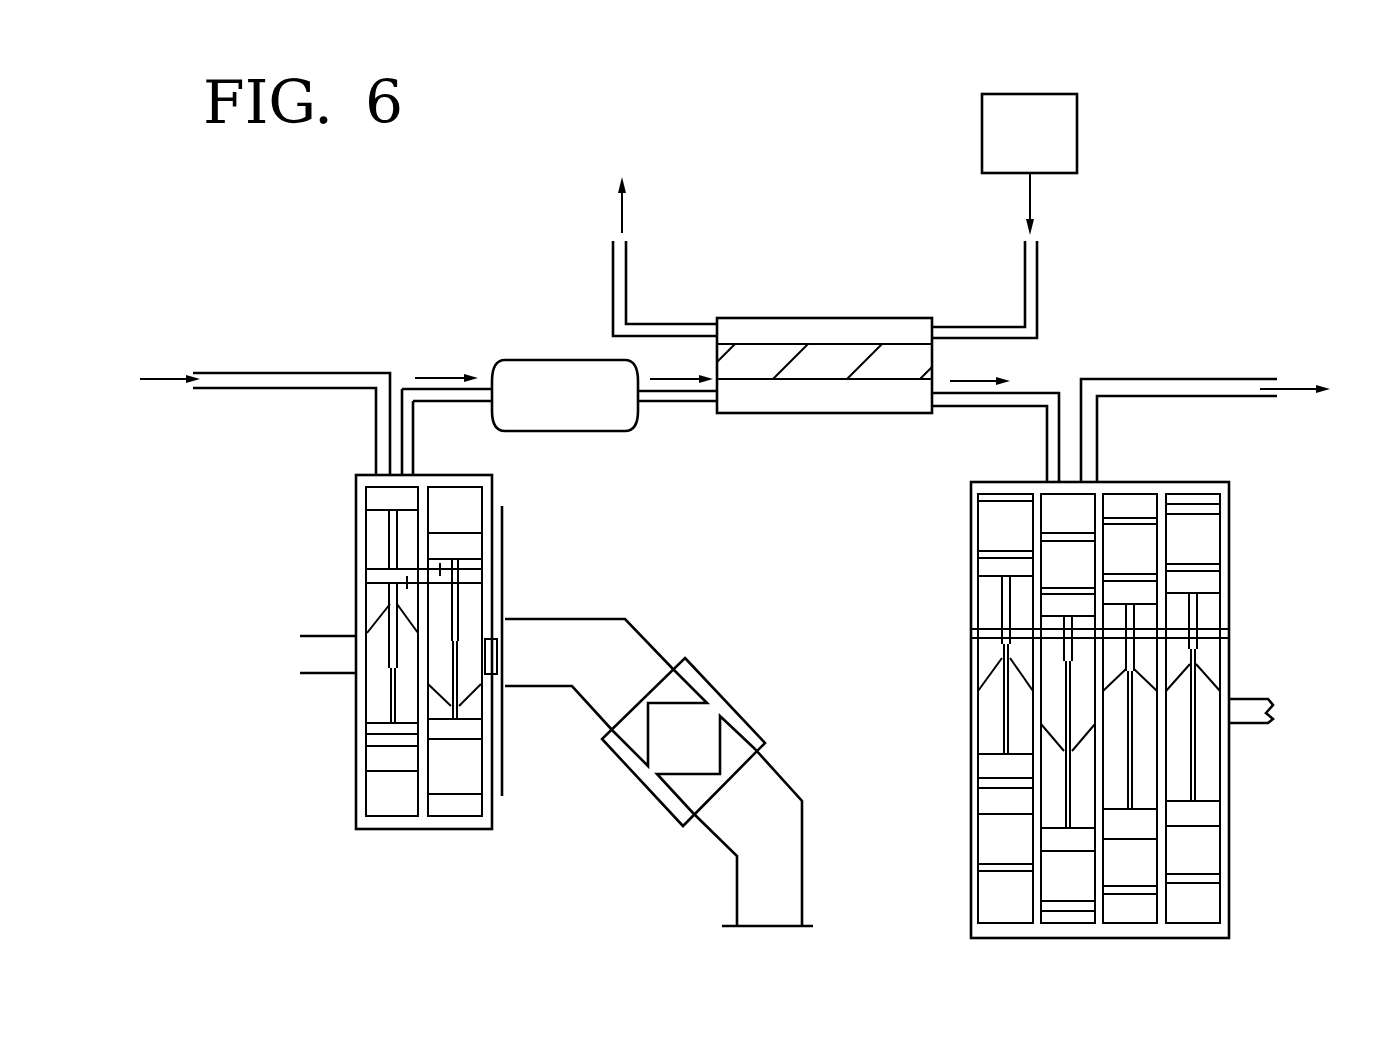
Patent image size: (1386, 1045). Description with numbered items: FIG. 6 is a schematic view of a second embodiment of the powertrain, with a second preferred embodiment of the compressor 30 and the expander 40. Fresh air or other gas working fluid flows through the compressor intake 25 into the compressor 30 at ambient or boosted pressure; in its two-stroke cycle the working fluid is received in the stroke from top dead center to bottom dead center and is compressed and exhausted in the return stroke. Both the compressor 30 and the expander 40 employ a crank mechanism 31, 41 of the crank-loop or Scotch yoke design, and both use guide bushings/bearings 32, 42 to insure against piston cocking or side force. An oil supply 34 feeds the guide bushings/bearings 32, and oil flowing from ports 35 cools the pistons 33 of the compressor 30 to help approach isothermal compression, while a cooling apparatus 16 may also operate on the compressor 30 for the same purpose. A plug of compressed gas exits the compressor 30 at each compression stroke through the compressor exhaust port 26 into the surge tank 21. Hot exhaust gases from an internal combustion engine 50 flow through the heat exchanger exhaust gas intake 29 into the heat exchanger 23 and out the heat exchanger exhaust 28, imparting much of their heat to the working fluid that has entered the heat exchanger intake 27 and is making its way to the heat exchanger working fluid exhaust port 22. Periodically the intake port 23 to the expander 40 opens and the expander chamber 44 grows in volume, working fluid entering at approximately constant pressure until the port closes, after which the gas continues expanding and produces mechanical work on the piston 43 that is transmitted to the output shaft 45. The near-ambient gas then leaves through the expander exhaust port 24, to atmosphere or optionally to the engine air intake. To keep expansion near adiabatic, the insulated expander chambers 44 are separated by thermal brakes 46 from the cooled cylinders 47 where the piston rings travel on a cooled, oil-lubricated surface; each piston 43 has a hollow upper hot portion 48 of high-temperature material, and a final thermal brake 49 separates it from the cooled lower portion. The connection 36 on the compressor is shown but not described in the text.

The cooling apparatus 16 is at (720, 695).
The surge tank 21 is at (592, 359).
The heat exchanger working fluid exhaust port 22 is at (1022, 393).
The heat exchanger 23 is at (855, 317).
The expander exhaust port 24 is at (1125, 378).
The compressor intake 25 is at (312, 370).
The compressor exhaust port 26 is at (433, 388).
The heat exchanger intake 27 is at (683, 401).
The heat exchanger exhaust 28 is at (655, 322).
The heat exchanger exhaust gas intake 29 is at (972, 326).
The compressor 30 is at (424, 652).
The crank mechanism 31 is at (420, 630).
The guide bushings/bearings 32 is at (453, 577).
The pistons 33 is at (480, 543).
The oil supply 34 is at (427, 600).
The ports 35 is at (410, 568).
The inlet 36 is at (328, 663).
The expander 40 is at (1106, 706).
The crank mechanism 41 is at (1198, 688).
The guide bushings/bearings 42 is at (1228, 633).
The piston 43 is at (1203, 578).
The expander chamber 44 is at (1212, 502).
The output shaft 45 is at (1230, 717).
The thermal brakes 46 is at (978, 553).
The cooled cylinders 47 is at (975, 625).
The upper hot portion 48 is at (990, 508).
The final thermal brake 49 is at (1000, 820).
The internal combustion engine 50 is at (982, 143).